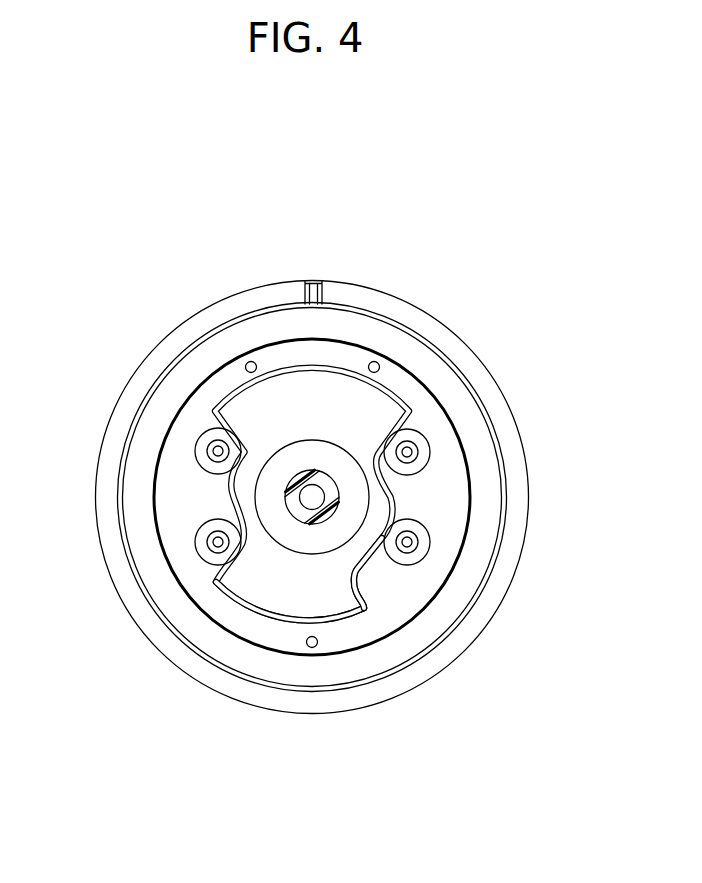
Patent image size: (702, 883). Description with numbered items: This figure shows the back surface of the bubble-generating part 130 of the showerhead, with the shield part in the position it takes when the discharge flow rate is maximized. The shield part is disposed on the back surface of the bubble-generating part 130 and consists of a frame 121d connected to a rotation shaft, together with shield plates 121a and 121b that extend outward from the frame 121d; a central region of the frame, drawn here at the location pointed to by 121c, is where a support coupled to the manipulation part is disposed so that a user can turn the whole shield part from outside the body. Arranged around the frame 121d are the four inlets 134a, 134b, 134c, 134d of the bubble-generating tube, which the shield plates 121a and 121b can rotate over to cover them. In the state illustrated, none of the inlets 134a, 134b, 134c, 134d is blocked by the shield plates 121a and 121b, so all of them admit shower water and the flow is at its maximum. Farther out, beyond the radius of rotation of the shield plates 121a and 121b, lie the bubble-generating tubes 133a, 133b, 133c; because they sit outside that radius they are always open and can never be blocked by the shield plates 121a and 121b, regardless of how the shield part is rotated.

The bubble-generating part 130 is at (460, 333).
The shield plate 121a is at (292, 380).
The shield plate 121b is at (250, 593).
The central boss of plate 121c is at (302, 513).
The frame 121d is at (363, 548).
The bubble-generating tube 133a is at (251, 361).
The bubble-generating tube 133b is at (376, 362).
The bubble-generating tube 133c is at (314, 648).
The inlet 134a is at (412, 451).
The inlet 134b is at (412, 541).
The inlet 134c is at (213, 541).
The inlet 134d is at (213, 450).